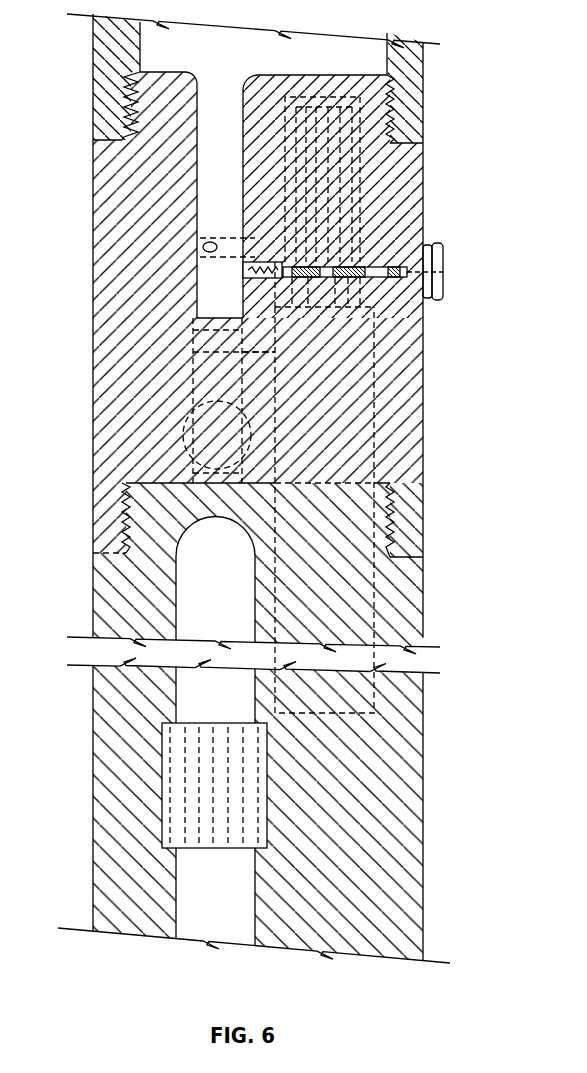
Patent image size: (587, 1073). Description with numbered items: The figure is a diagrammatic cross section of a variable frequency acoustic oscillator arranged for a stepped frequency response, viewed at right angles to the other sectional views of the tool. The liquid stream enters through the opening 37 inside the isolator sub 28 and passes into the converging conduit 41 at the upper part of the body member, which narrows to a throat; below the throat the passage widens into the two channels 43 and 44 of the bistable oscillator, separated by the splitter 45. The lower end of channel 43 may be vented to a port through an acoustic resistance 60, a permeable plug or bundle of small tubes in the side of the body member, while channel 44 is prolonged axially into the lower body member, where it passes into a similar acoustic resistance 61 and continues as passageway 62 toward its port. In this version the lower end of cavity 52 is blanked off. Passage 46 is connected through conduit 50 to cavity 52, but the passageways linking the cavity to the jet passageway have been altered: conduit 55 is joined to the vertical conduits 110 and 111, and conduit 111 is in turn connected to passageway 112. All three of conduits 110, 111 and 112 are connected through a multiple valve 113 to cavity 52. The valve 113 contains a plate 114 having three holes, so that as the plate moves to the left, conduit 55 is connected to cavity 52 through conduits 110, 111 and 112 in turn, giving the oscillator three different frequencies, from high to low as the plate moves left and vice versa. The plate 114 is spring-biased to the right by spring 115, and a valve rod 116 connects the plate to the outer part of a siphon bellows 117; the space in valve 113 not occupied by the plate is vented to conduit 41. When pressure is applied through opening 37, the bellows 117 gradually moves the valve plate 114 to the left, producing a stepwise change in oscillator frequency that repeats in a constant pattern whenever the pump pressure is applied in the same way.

The isolator sub 28 is at (425, 60).
The opening 37 is at (254, 61).
The converging conduit 41 is at (215, 134).
The channel 43 is at (207, 385).
The channel 44 is at (232, 587).
The splitter 45 is at (215, 323).
The passage 46 is at (207, 342).
The conduit 50 is at (253, 338).
The cavity 52 is at (355, 445).
The conduit 55 is at (265, 252).
The acoustic resistance 60 is at (185, 433).
The acoustic resistance 61 is at (185, 788).
The passageway 62 is at (231, 902).
The vertical conduit 110 is at (290, 296).
The vertical conduit 111 is at (293, 100).
The passageway 112 is at (355, 165).
The multiple valve 113 is at (395, 282).
The valve plate 114 is at (382, 290).
The spring 115 is at (272, 258).
The valve rod 116 is at (425, 247).
The siphon bellows 117 is at (437, 287).